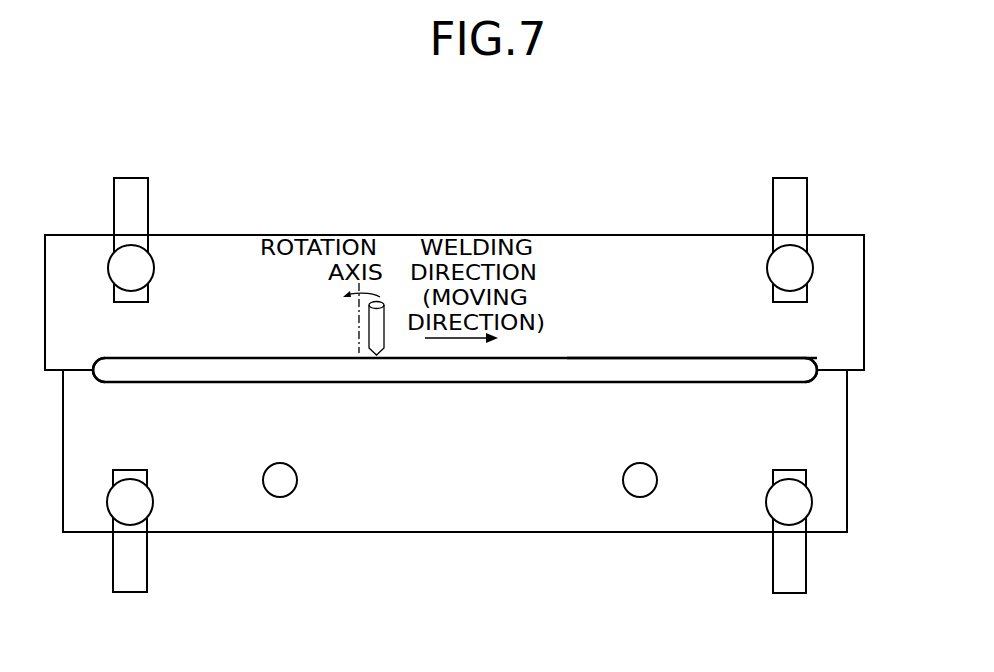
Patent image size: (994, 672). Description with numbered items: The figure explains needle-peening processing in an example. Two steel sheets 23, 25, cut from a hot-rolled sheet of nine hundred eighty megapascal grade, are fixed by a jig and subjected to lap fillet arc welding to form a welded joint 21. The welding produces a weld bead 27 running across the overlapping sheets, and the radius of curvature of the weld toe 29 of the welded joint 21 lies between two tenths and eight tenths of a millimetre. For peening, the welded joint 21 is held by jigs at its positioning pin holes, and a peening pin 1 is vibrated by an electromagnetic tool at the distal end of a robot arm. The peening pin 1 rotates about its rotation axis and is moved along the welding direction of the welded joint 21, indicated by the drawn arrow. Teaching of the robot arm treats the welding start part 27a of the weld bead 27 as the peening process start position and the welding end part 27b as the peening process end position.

The peening pin 1 is at (385, 315).
The welded joint 21 is at (489, 316).
The steel sheet 23 is at (866, 305).
The steel sheet 25 is at (848, 452).
The weld bead 27 is at (641, 357).
The welding start part 27a is at (93, 368).
The welding end part 27b is at (818, 364).
The weld toe 29 is at (567, 357).